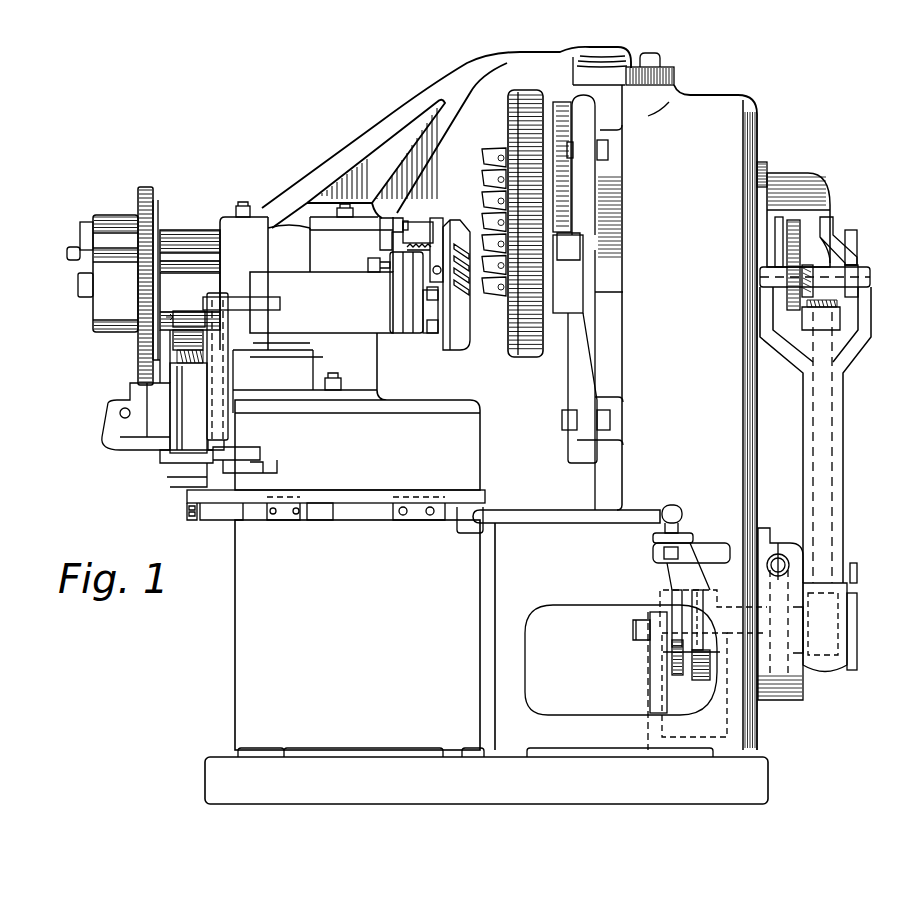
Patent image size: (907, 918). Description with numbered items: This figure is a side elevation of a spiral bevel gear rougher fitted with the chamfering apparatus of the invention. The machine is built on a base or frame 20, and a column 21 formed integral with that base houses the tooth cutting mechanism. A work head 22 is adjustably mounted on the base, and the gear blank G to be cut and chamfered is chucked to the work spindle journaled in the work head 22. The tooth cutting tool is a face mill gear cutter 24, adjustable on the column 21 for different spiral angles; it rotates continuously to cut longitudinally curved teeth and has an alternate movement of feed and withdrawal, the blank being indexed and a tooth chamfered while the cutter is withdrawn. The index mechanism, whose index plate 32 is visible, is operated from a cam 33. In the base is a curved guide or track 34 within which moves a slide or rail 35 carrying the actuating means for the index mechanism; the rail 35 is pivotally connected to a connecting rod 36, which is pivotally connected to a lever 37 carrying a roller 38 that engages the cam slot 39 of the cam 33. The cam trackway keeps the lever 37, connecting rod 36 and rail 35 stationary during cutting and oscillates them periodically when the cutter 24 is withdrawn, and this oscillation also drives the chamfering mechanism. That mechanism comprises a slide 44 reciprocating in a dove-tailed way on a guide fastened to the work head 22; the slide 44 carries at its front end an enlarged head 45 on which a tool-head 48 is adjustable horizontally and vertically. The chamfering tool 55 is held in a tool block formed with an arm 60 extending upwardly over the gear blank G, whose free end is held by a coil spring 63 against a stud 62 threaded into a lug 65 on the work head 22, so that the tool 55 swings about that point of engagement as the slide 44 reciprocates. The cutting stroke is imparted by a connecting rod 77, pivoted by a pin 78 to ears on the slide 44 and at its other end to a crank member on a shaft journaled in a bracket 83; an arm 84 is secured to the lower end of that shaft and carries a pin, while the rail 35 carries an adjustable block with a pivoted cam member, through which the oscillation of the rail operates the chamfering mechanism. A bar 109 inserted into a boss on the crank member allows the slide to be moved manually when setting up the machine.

The base or frame 20 is at (357, 635).
The column 21 is at (687, 417).
The work head 22 is at (367, 373).
The face mill gear cutter 24 is at (491, 297).
The index plate 32 is at (150, 187).
The cam 33 is at (703, 679).
The curved guide or track 34 is at (325, 521).
The slide or rail 35 is at (372, 504).
The connecting rod 36 is at (590, 523).
The lever 37 is at (690, 552).
The roller 38 is at (664, 590).
The cam slot 39 is at (690, 670).
The slide 44 is at (321, 275).
The enlarged head 45 is at (400, 334).
The tool-head 48 is at (426, 334).
The chamfering tool 55 is at (459, 275).
The arm 60 is at (438, 226).
The stud 62 is at (421, 222).
The coil-spring 63 is at (418, 239).
The lug 65 is at (393, 213).
The connecting-rod 77 is at (228, 305).
The pin 78 is at (283, 299).
The bracket 83 is at (238, 385).
The arm 84 is at (232, 440).
The bar 109 is at (188, 312).
The gear blank G is at (465, 330).